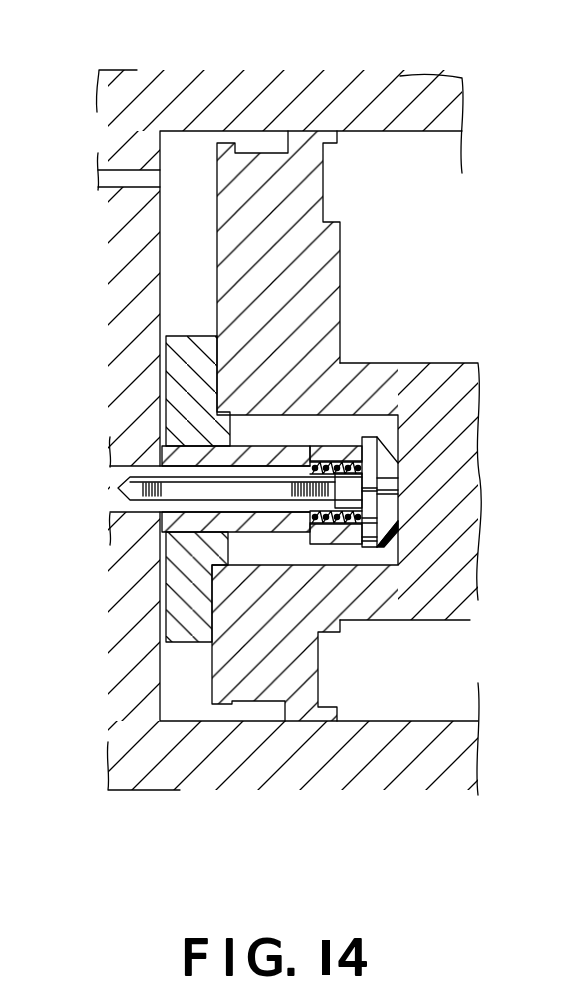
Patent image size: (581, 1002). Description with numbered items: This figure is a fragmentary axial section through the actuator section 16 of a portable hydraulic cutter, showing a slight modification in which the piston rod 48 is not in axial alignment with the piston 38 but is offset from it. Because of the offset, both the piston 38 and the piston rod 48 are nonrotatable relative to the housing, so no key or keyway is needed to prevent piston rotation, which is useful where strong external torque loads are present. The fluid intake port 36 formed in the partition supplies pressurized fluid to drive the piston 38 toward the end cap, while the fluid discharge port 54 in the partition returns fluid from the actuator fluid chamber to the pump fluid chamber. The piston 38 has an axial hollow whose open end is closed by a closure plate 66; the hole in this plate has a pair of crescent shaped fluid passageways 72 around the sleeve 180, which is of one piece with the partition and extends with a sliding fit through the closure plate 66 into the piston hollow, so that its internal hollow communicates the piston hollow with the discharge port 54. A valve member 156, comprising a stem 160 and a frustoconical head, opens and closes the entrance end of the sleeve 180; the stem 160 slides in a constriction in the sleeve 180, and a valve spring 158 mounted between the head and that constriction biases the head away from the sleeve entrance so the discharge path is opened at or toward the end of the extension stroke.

The actuator section 16 is at (292, 80).
The fluid intake port 36 is at (98, 170).
The piston 38 is at (336, 247).
The piston rod 48 is at (470, 610).
The fluid discharge port 54 is at (162, 505).
The closure plate 66 is at (190, 350).
The fluid passageways 72 is at (168, 466).
The valve member 156 is at (400, 462).
The valve spring 158 is at (330, 460).
The stem 160 is at (358, 530).
The sleeve 180 is at (244, 520).